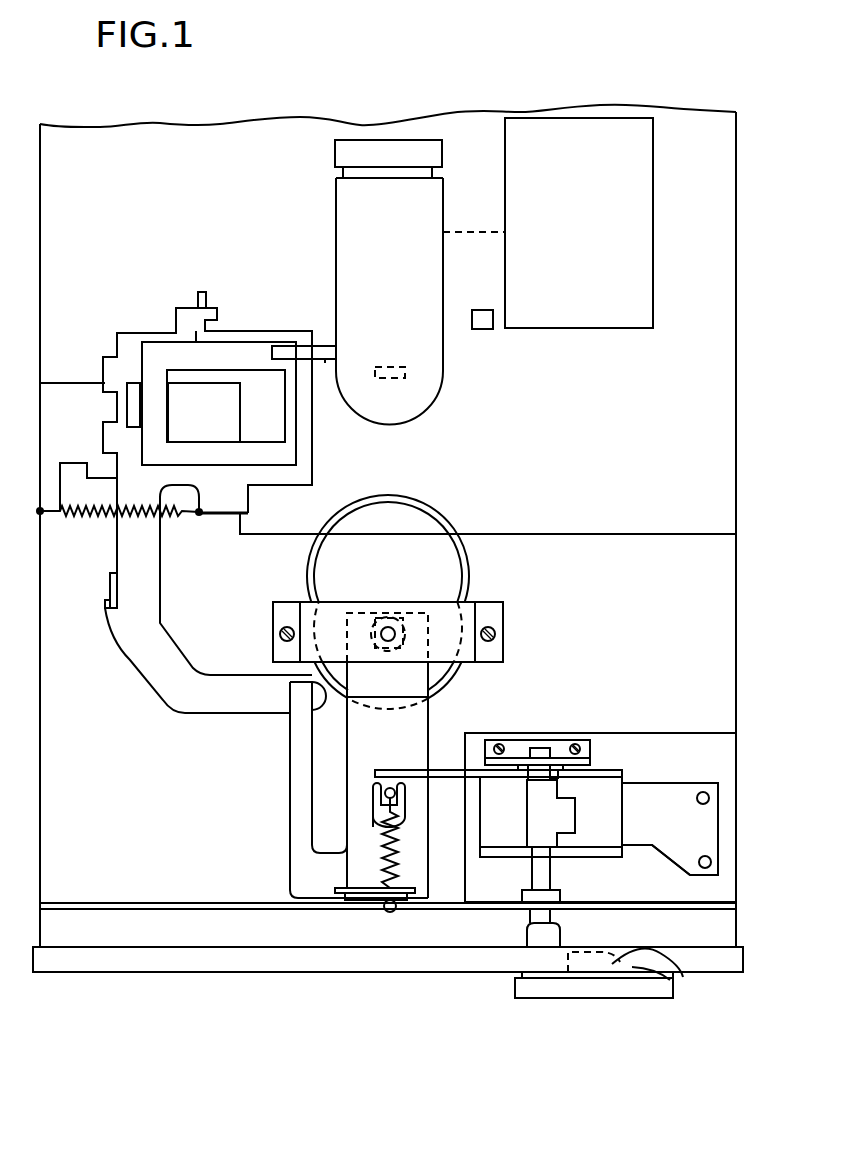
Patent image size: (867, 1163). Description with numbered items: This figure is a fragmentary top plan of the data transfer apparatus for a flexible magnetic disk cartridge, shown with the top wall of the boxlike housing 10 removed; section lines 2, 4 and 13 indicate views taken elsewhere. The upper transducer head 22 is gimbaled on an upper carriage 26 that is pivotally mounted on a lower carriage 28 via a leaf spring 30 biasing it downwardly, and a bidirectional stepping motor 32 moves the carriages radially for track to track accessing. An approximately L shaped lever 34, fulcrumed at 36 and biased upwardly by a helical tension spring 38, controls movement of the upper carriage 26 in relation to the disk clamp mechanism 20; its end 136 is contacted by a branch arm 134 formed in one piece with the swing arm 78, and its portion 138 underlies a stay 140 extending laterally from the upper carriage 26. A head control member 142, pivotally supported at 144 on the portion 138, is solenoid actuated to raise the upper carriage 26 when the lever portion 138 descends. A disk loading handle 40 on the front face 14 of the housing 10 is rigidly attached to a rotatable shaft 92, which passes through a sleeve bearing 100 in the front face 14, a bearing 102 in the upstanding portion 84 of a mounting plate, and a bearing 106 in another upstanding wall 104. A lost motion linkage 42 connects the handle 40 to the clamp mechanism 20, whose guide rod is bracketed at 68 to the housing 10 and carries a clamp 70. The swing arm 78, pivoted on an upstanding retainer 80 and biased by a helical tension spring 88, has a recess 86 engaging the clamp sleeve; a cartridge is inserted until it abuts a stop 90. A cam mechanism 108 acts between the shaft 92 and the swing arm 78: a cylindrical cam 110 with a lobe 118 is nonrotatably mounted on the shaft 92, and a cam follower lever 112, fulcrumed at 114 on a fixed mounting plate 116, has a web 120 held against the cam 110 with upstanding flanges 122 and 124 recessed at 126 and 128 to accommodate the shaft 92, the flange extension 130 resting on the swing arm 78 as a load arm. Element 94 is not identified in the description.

The housing 10 is at (742, 286).
The front face 14 is at (243, 975).
The disk clamp mechanism 20 is at (308, 574).
The upper transducer head 22 is at (388, 380).
The upper carriage 26 is at (445, 288).
The lower carriage 28 is at (335, 150).
The leaf spring 30 is at (345, 172).
The bidirectional stepping motor 32 is at (608, 326).
The L shaped lever 34 is at (114, 649).
The fulcrum 36 is at (105, 607).
The helical tension spring 38 is at (178, 516).
The disk loading handle 40 is at (518, 982).
The lost motion linkage 42 is at (531, 726).
The bracket 68 is at (496, 605).
The clamp 70 is at (440, 590).
The swing arm 78 is at (426, 745).
The upstanding retainer 80 is at (348, 888).
The upstanding portion 84 is at (683, 908).
The recess 86 is at (378, 617).
The helical tension spring 88 is at (388, 872).
The stop 90 is at (483, 330).
The rotatable shaft 92 is at (552, 870).
The hook member 94 is at (680, 975).
The sleeve bearing 100 is at (525, 935).
The bearing 102 is at (553, 896).
The upstanding wall 104 is at (553, 757).
The bearing 106 is at (525, 752).
The cam mechanism 108 is at (630, 793).
The cam 110 is at (519, 824).
The cam follower lever 112 is at (694, 778).
The fulcrum 114 is at (697, 801).
The fixed mounting plate 116 is at (737, 862).
The lobe 118 is at (572, 820).
The web 120 is at (637, 836).
The upstanding flange 122 is at (602, 770).
The upstanding flange 124 is at (605, 858).
The recess 126 is at (560, 781).
The recess 128 is at (528, 860).
The flange extension 130 is at (383, 769).
The branch arm 134 is at (293, 736).
The end of lever 136 is at (258, 682).
The lever portion 138 is at (302, 336).
The stay 140 is at (325, 360).
The head control member 142 is at (170, 350).
The pivot 144 is at (128, 396).
The section line 13- 13 is at (290, 812).
The section line 2- 2 is at (532, 108).
The section line 4- 4 is at (390, 534).